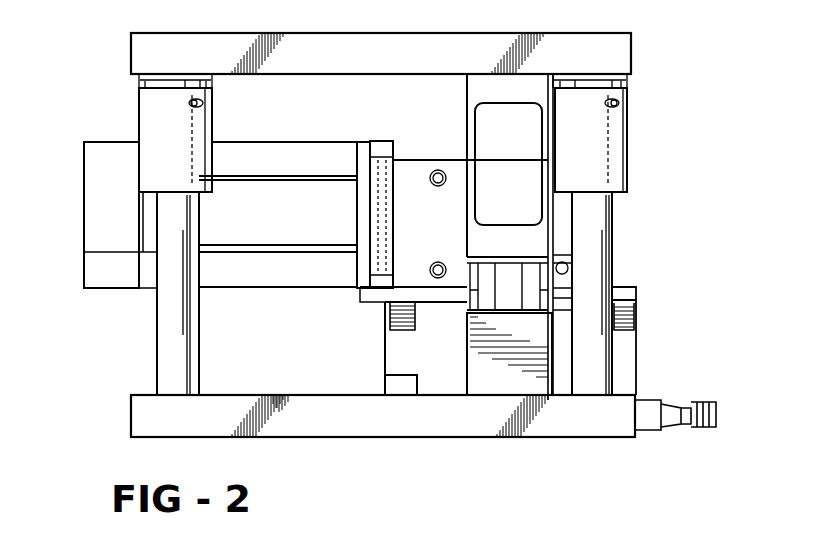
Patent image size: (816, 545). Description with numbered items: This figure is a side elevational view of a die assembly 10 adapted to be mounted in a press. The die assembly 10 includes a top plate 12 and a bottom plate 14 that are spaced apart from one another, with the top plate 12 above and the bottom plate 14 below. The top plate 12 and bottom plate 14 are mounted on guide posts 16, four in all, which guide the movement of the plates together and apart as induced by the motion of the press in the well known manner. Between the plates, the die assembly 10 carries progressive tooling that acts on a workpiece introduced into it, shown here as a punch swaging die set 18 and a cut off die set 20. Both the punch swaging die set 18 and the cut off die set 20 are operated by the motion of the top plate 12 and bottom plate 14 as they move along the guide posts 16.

The die assembly 10 is at (672, 116).
The top plate 12 is at (143, 52).
The bottom plate 14 is at (360, 423).
The guide posts 16 is at (168, 329).
The punch swaging die set 18 is at (466, 128).
The cut off die set 20 is at (334, 291).